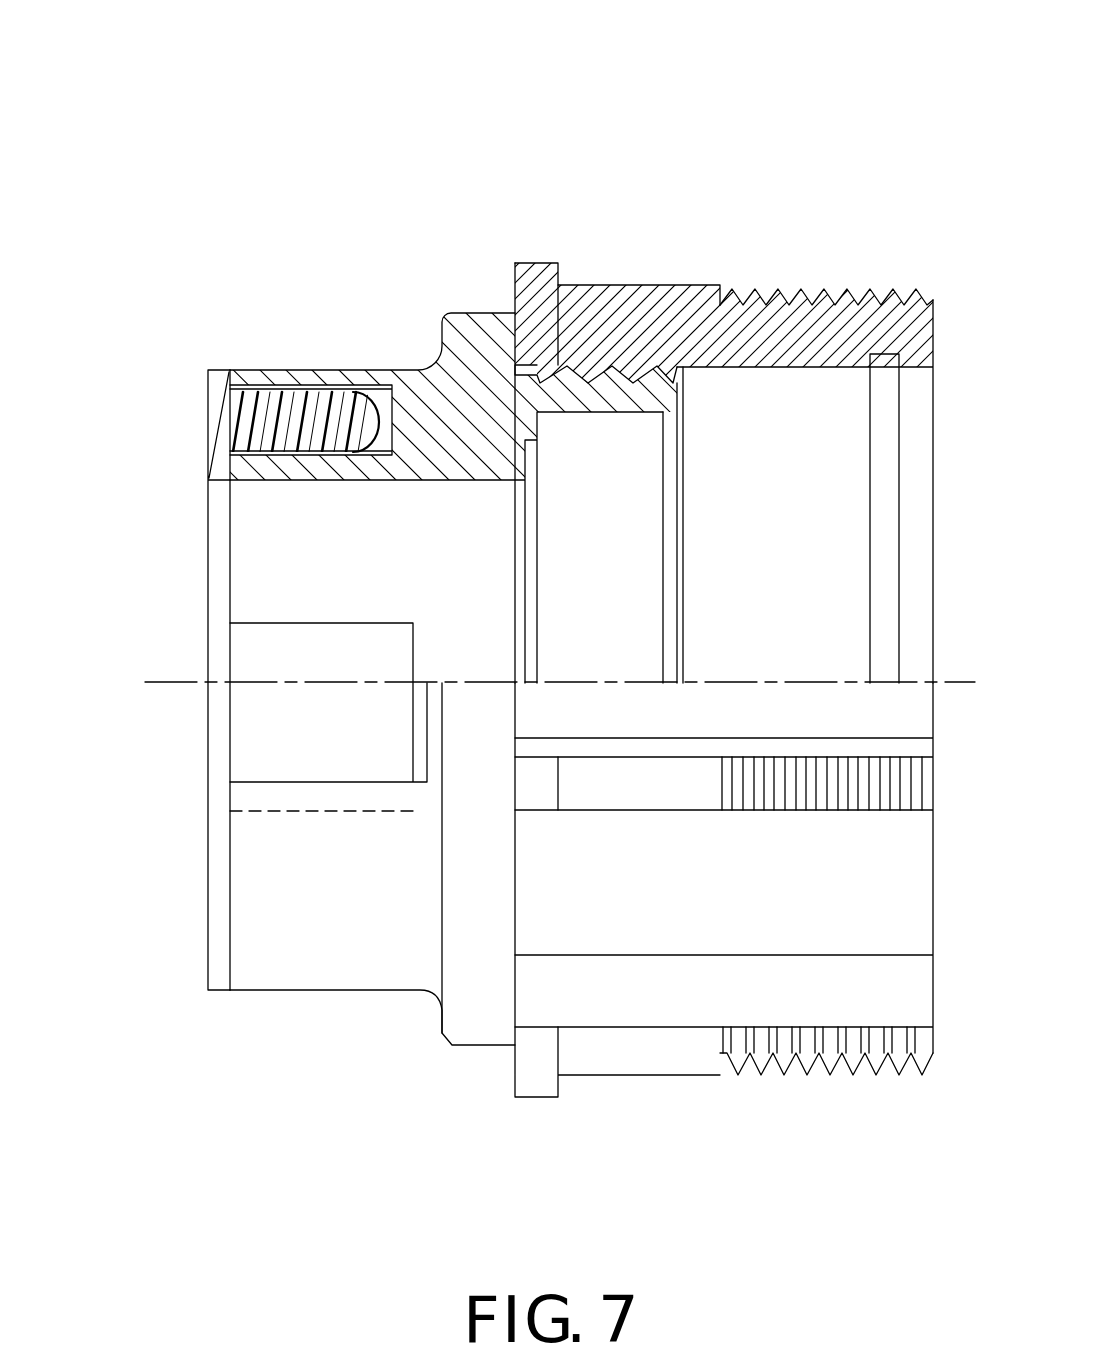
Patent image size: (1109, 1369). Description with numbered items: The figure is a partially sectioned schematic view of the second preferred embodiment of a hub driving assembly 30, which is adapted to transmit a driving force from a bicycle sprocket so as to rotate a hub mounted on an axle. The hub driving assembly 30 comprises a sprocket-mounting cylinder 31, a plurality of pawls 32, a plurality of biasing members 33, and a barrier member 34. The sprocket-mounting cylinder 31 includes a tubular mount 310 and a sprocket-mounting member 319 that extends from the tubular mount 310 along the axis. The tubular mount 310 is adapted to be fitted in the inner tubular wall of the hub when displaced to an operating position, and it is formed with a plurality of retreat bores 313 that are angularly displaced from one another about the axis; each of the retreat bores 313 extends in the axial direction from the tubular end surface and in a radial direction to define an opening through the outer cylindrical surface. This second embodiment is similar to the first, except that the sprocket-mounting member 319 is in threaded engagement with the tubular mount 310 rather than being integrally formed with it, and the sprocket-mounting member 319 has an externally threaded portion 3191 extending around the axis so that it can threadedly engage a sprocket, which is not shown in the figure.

The hub driving assembly 30 is at (752, 160).
The sprocket-mounting cylinder 31 is at (443, 148).
The tubular mount 310 is at (418, 387).
The retreat bores 313 is at (380, 405).
The sprocket-mounting member 319 is at (625, 305).
The externally threaded portion 3191 is at (848, 292).
The pawls 32 is at (244, 742).
The biasing members 33 is at (297, 387).
The barrier member 34 is at (215, 522).